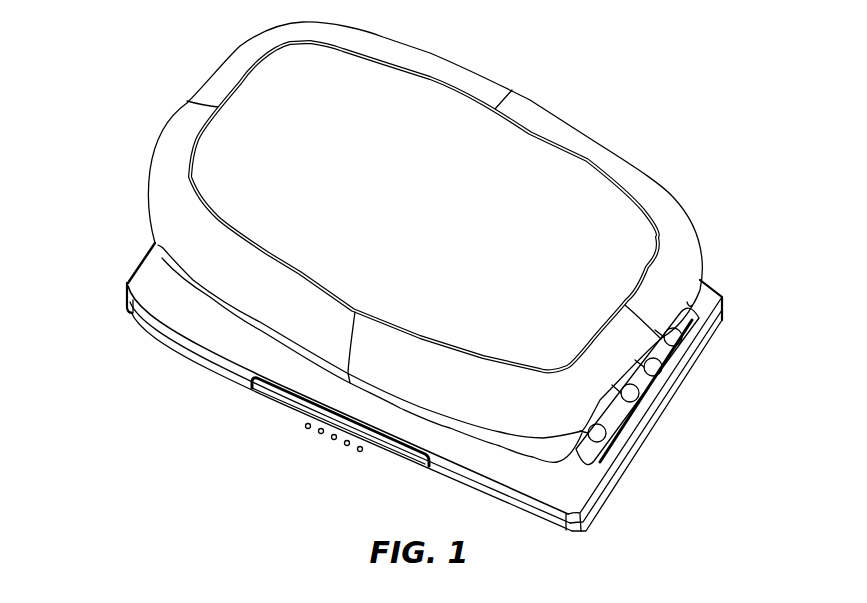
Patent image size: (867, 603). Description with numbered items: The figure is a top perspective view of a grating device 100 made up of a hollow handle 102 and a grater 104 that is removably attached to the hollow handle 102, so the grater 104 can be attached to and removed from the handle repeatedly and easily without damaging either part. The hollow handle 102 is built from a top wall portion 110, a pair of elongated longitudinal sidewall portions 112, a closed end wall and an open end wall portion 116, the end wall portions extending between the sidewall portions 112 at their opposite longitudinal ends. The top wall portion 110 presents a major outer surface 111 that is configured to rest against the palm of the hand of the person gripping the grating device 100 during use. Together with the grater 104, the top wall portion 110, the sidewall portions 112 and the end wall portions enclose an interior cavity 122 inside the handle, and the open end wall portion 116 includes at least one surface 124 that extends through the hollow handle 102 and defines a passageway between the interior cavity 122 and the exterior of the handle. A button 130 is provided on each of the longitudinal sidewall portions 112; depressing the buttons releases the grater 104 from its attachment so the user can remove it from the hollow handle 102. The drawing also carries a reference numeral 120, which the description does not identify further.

The grating device 100 is at (134, 86).
The hollow handle 102 is at (208, 261).
The grater 104 is at (173, 347).
The top wall portion 110 is at (437, 107).
The major outer surface 111 is at (547, 210).
The longitudinal sidewall portions 112 is at (262, 330).
The open end wall portion 116 is at (705, 298).
The cover rim 120 is at (700, 233).
The interior cavity 122 is at (653, 372).
The surface 124 is at (637, 433).
The button 130 is at (306, 427).